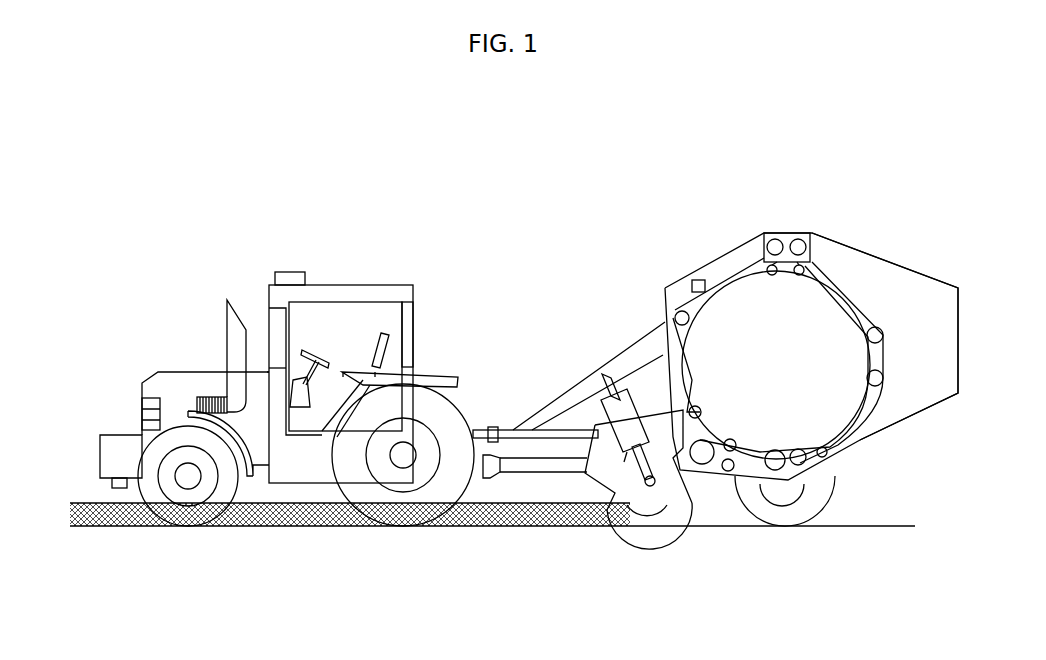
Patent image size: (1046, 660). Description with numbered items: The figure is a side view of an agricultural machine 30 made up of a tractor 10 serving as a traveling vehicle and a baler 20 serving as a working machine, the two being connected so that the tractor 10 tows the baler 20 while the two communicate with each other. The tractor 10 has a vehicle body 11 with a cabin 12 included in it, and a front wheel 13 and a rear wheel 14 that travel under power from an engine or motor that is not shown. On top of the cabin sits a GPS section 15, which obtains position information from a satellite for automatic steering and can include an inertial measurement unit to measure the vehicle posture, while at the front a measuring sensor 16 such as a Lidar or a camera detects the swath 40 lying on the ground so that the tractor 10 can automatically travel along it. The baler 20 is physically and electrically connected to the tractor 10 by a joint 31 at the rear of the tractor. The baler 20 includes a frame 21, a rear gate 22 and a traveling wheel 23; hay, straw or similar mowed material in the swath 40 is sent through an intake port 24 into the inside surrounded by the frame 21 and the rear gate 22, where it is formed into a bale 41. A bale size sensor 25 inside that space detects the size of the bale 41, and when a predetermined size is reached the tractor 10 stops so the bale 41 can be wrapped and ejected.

The tractor 10 is at (358, 285).
The vehicle body 11 is at (180, 380).
The cabin 12 is at (341, 333).
The front wheel 13 is at (192, 515).
The rear wheel 14 is at (407, 515).
The GPS section 15 is at (296, 278).
The measuring sensor 16 is at (118, 478).
The baler 20 is at (910, 252).
The frame 21 is at (765, 348).
The rear gate 22 is at (888, 418).
The traveling wheel 23 is at (793, 510).
The intake port 24 is at (615, 492).
The bale size sensor 25 is at (695, 279).
The agricultural machine 30 is at (539, 167).
The joint 31 is at (492, 427).
The swath 40 is at (105, 515).
The bale 41 is at (745, 292).